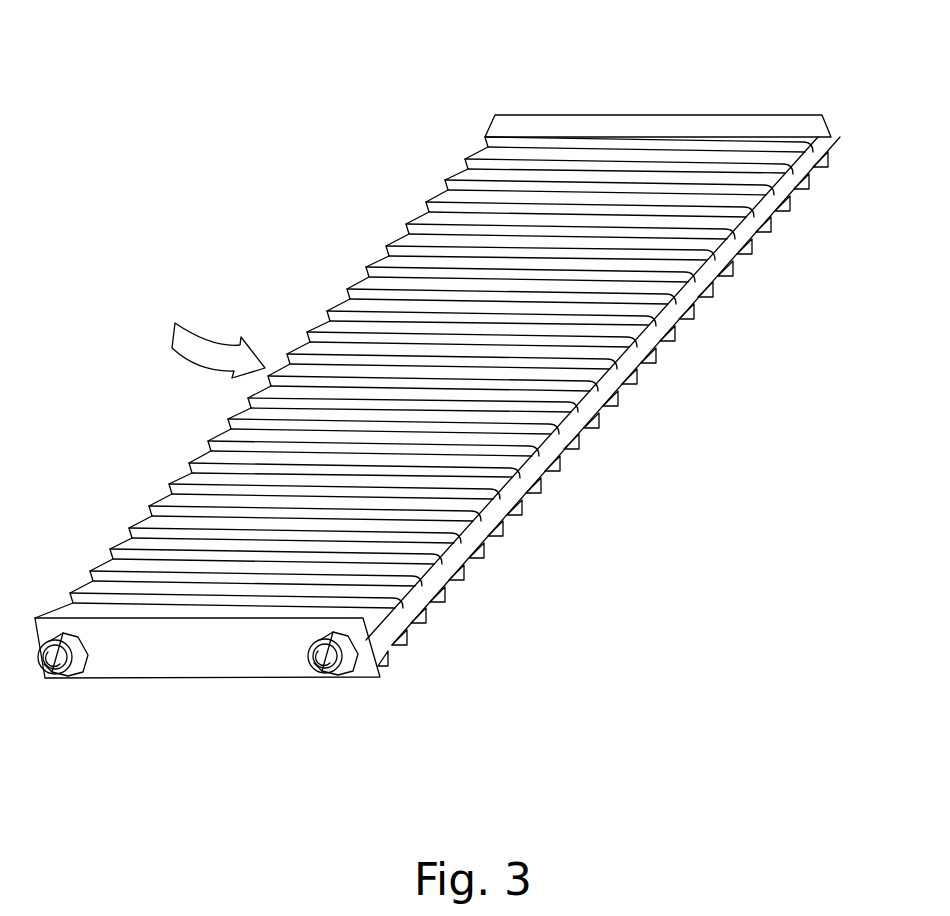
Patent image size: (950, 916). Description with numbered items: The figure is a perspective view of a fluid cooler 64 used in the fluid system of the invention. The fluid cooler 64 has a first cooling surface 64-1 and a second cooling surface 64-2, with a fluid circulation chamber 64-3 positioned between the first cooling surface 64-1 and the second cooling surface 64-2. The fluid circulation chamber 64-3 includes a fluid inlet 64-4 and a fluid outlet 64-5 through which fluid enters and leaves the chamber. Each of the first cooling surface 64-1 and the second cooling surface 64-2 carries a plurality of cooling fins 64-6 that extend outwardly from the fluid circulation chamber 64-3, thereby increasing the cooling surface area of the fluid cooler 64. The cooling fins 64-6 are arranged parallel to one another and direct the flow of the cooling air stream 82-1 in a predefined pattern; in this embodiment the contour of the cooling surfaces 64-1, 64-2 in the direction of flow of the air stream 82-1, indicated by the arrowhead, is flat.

The fluid cooler 64 is at (196, 162).
The first cooling surface 64-1 is at (503, 292).
The second cooling surface 64-2 is at (620, 383).
The fluid circulation chamber 64-3 is at (663, 328).
The fluid inlet 64-4 is at (328, 660).
The fluid outlet 64-5 is at (52, 677).
The cooling fins 64-6 is at (631, 124).
The air stream 82-1 is at (202, 345).